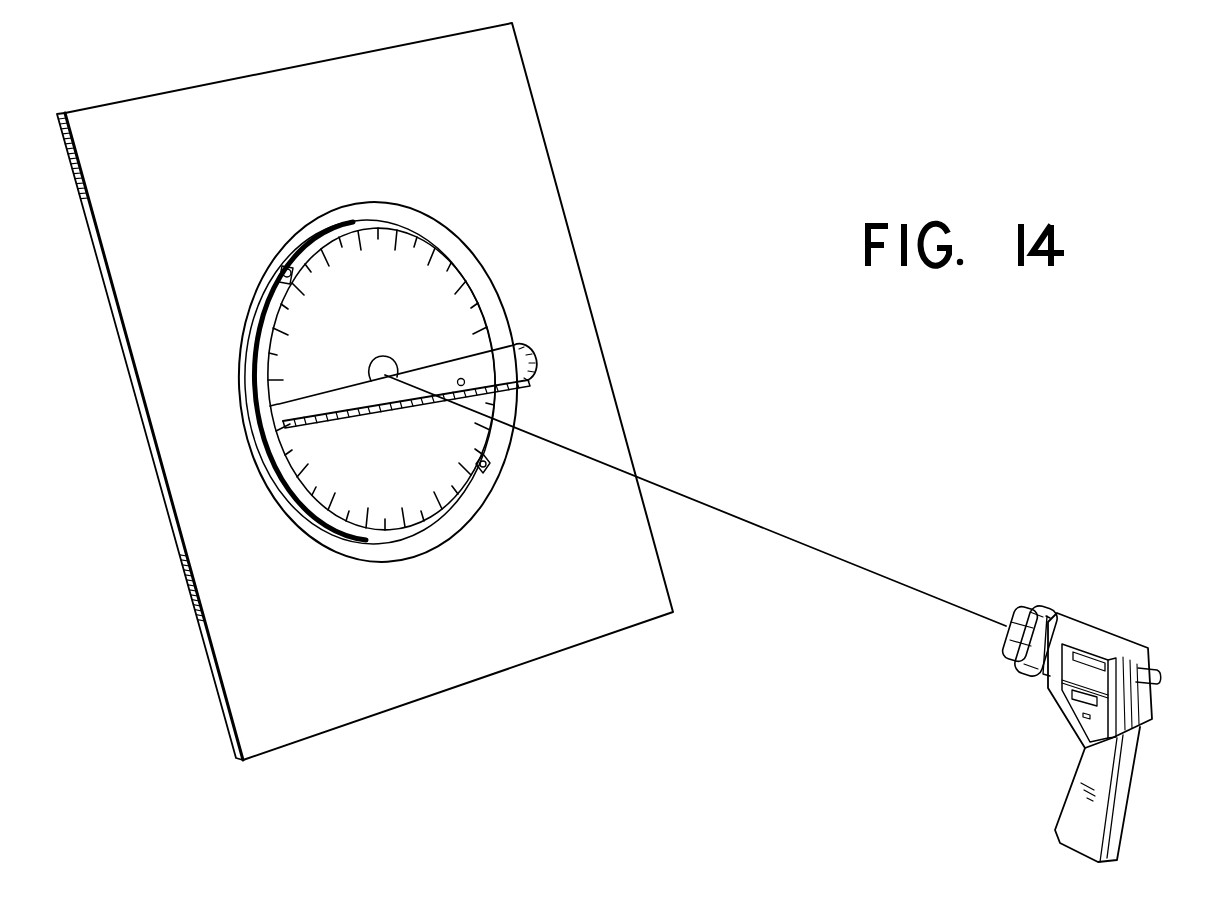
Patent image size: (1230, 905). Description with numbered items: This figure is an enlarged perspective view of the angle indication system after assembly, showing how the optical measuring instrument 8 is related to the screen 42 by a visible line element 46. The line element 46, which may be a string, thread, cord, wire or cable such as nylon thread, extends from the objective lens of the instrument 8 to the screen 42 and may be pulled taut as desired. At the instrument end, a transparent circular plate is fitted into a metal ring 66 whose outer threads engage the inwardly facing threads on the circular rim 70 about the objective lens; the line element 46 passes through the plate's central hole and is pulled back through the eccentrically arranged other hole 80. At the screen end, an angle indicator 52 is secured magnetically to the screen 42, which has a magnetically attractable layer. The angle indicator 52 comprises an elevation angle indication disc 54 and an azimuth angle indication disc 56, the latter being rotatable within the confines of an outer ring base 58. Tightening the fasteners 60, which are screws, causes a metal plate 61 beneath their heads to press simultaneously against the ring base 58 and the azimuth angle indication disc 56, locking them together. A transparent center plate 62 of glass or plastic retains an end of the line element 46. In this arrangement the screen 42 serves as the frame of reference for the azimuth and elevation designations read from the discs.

The instrument 8 is at (1133, 796).
The screen 42 is at (519, 131).
The line element 46 is at (852, 564).
The angle indicator 52 is at (391, 565).
The elevation angle indication disc 54 is at (508, 349).
The azimuth angle indication disc 56 is at (437, 288).
The outer ring base 58 is at (254, 293).
The fasteners 60 is at (286, 264).
The metal plate 61 is at (292, 285).
The center plate 62 is at (392, 369).
The metal ring 66 is at (1034, 612).
The circular rim 70 is at (1034, 664).
The other hole 80 is at (996, 654).